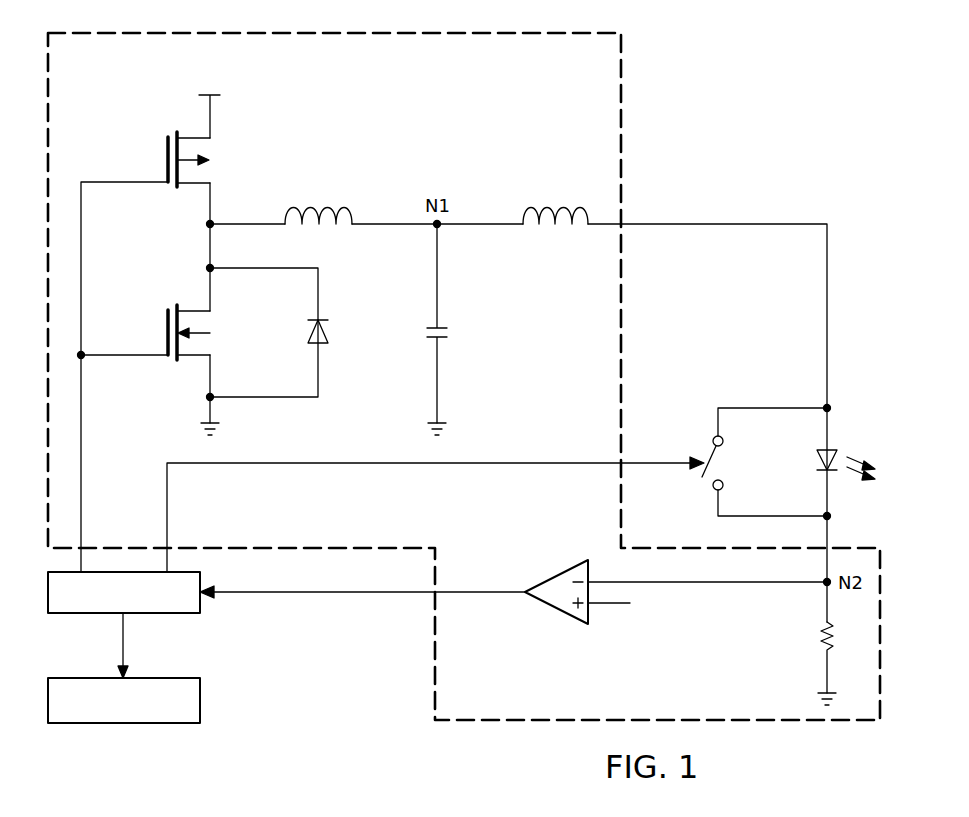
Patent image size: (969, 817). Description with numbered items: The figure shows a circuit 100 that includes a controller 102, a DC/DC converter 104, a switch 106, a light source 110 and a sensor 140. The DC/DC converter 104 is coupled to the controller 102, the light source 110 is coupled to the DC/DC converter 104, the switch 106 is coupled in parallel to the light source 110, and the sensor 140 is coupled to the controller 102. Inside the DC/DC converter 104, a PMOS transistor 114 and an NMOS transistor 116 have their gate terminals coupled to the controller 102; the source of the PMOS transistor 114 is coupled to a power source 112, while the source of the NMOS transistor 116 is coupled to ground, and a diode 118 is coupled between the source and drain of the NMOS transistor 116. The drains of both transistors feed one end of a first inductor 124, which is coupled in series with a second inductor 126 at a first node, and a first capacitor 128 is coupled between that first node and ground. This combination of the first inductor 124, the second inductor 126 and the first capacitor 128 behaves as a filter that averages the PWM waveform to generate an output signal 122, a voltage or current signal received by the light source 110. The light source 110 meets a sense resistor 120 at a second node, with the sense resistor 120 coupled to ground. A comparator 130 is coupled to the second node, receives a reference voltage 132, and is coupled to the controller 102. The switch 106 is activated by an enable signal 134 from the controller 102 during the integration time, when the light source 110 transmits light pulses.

The circuit 100 is at (752, 60).
The controller 102 is at (100, 615).
The DC/DC converter 104 is at (622, 135).
The switch 106 is at (712, 447).
The light source 110 is at (815, 465).
The power source Vd 112 is at (190, 72).
The PMOS transistor 114 is at (165, 150).
The NMOS transistor 116 is at (165, 324).
The diode 118 is at (305, 325).
The sense resistor Rs 120 is at (820, 632).
The output signal 122 is at (708, 224).
The first inductor L1 124 is at (308, 206).
The second inductor L2 126 is at (565, 207).
The first capacitor C1 128 is at (425, 333).
The comparator 130 is at (552, 610).
The reference voltage Vref 132 is at (612, 606).
The enable signal 134 is at (432, 464).
The sensor 140 is at (100, 725).